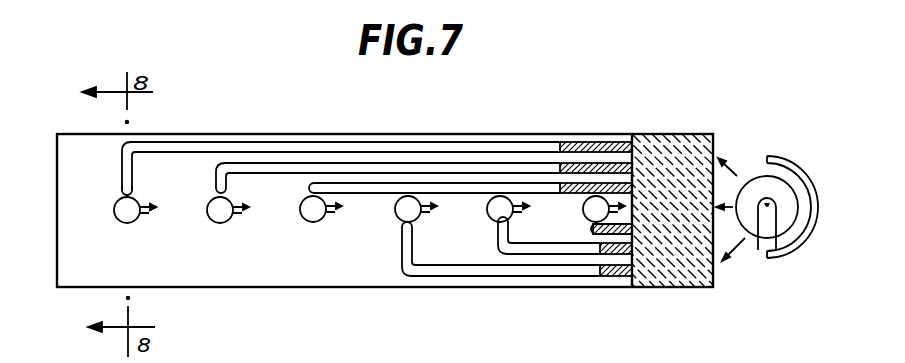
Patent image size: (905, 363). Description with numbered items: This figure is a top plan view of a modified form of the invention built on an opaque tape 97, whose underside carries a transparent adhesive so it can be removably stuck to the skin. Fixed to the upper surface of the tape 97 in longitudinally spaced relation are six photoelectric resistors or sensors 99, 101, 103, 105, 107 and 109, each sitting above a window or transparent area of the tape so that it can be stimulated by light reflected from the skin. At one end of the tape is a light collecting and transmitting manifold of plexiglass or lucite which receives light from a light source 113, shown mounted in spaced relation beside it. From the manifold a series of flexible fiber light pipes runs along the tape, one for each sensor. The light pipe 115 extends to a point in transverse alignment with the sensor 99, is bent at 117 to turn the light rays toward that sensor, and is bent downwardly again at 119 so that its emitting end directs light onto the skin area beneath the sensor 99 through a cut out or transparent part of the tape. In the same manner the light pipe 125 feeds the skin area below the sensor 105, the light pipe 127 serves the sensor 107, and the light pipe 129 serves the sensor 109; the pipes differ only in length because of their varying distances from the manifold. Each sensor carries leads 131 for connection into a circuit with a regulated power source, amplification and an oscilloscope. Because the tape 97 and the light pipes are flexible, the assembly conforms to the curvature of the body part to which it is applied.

The opaque tape 97 is at (268, 277).
The photoelectric resistor or sensor 99 is at (120, 218).
The photoelectric resistor or sensor 101 is at (214, 221).
The photoelectric resistor or sensor 103 is at (306, 220).
The photoelectric resistor or sensor 105 is at (400, 216).
The photoelectric resistor or sensor 107 is at (490, 217).
The photoelectric resistor or sensor 109 is at (588, 208).
The light source 113 is at (752, 232).
The flexible fiber light pipe 115 is at (216, 148).
The bend of light pipe 117 is at (123, 168).
The downwardly bent end of light pipe 119 is at (118, 196).
The light pipe 125 is at (447, 277).
The light pipe 127 is at (560, 255).
The light pipe 129 is at (592, 235).
The leads 131 is at (153, 243).